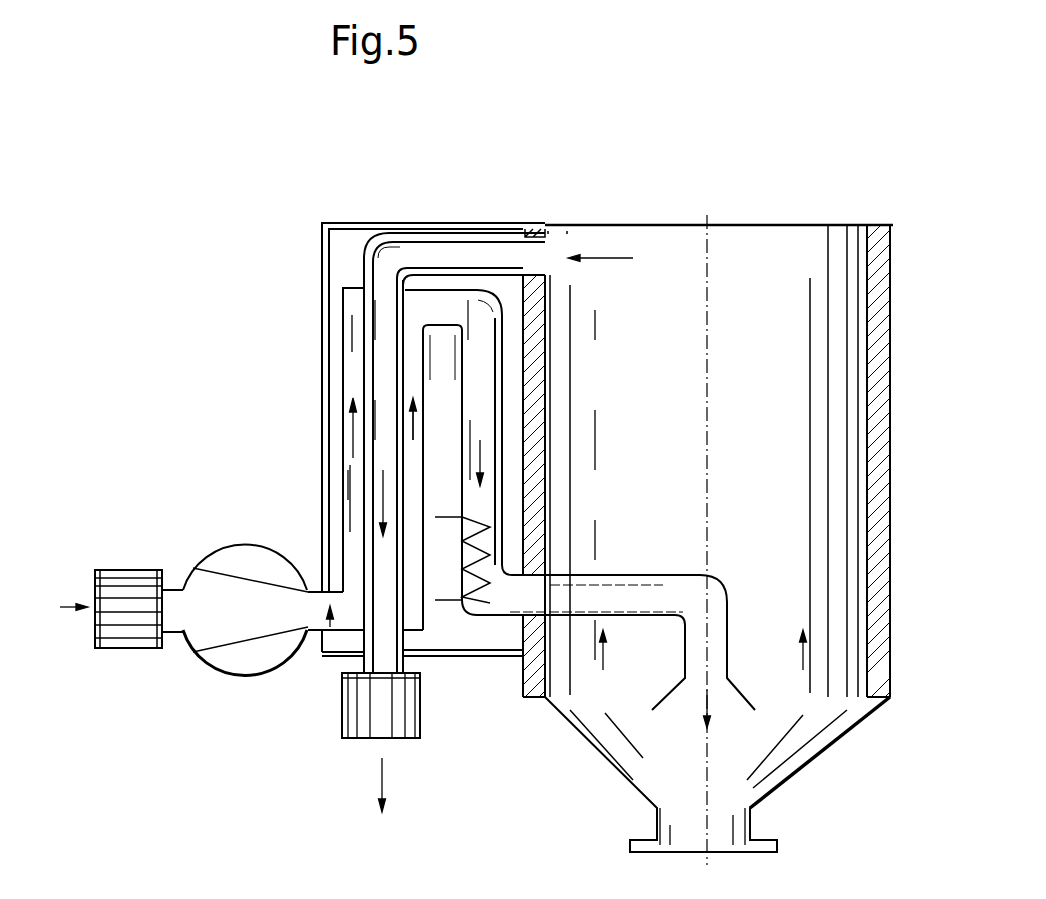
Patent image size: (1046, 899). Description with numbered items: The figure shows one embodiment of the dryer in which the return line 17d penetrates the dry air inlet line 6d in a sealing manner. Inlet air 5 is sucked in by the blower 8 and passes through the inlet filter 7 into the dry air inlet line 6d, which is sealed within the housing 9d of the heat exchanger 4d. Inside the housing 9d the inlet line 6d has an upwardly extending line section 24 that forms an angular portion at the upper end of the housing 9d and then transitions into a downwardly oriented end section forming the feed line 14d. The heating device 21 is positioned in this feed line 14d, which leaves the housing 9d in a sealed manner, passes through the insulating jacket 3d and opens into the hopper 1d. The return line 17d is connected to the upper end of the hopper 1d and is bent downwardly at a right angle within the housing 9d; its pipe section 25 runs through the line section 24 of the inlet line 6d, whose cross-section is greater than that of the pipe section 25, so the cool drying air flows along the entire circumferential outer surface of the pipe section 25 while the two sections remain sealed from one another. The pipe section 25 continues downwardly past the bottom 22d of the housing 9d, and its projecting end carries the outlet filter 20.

The hopper 1d is at (757, 247).
The insulating jacket 3d is at (505, 508).
The heat exchanger 4d is at (340, 296).
The inlet air 5 is at (67, 605).
The dry air inlet line 6d is at (322, 655).
The inlet filter 7 is at (135, 623).
The blower 8 is at (242, 657).
The housing 9d is at (395, 407).
The feed line 14d is at (480, 395).
The return line 17d is at (476, 260).
The outlet filter 20 is at (368, 722).
The heating device 21 is at (458, 602).
The bottom 22d is at (438, 656).
The line section 24 is at (350, 478).
The pipe section 25 is at (368, 530).